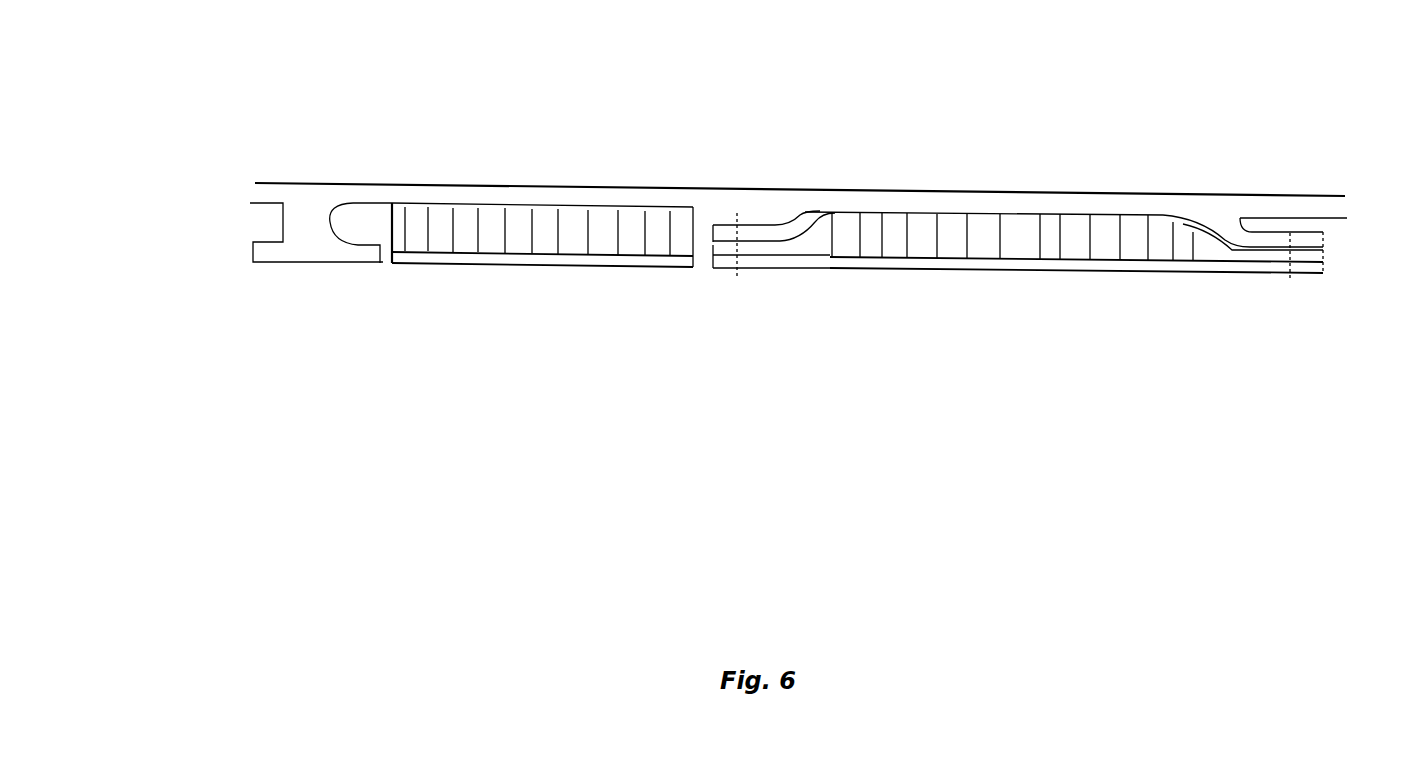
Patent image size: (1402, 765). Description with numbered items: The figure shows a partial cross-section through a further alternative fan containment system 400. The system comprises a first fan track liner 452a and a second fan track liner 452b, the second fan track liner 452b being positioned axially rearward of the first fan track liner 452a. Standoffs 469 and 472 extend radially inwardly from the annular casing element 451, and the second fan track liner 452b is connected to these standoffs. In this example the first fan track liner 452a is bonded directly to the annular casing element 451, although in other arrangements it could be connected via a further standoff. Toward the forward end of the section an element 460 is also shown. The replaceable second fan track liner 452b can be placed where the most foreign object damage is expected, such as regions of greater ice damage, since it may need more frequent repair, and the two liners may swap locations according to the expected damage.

The fan containment system 400 is at (773, 213).
The annular casing element 451 is at (513, 185).
The first fan track liner 452a is at (525, 244).
The second fan track liner 452b is at (1018, 247).
The end bracket 460 is at (315, 255).
The standoff 469 is at (757, 230).
The standoff 472 is at (1302, 237).